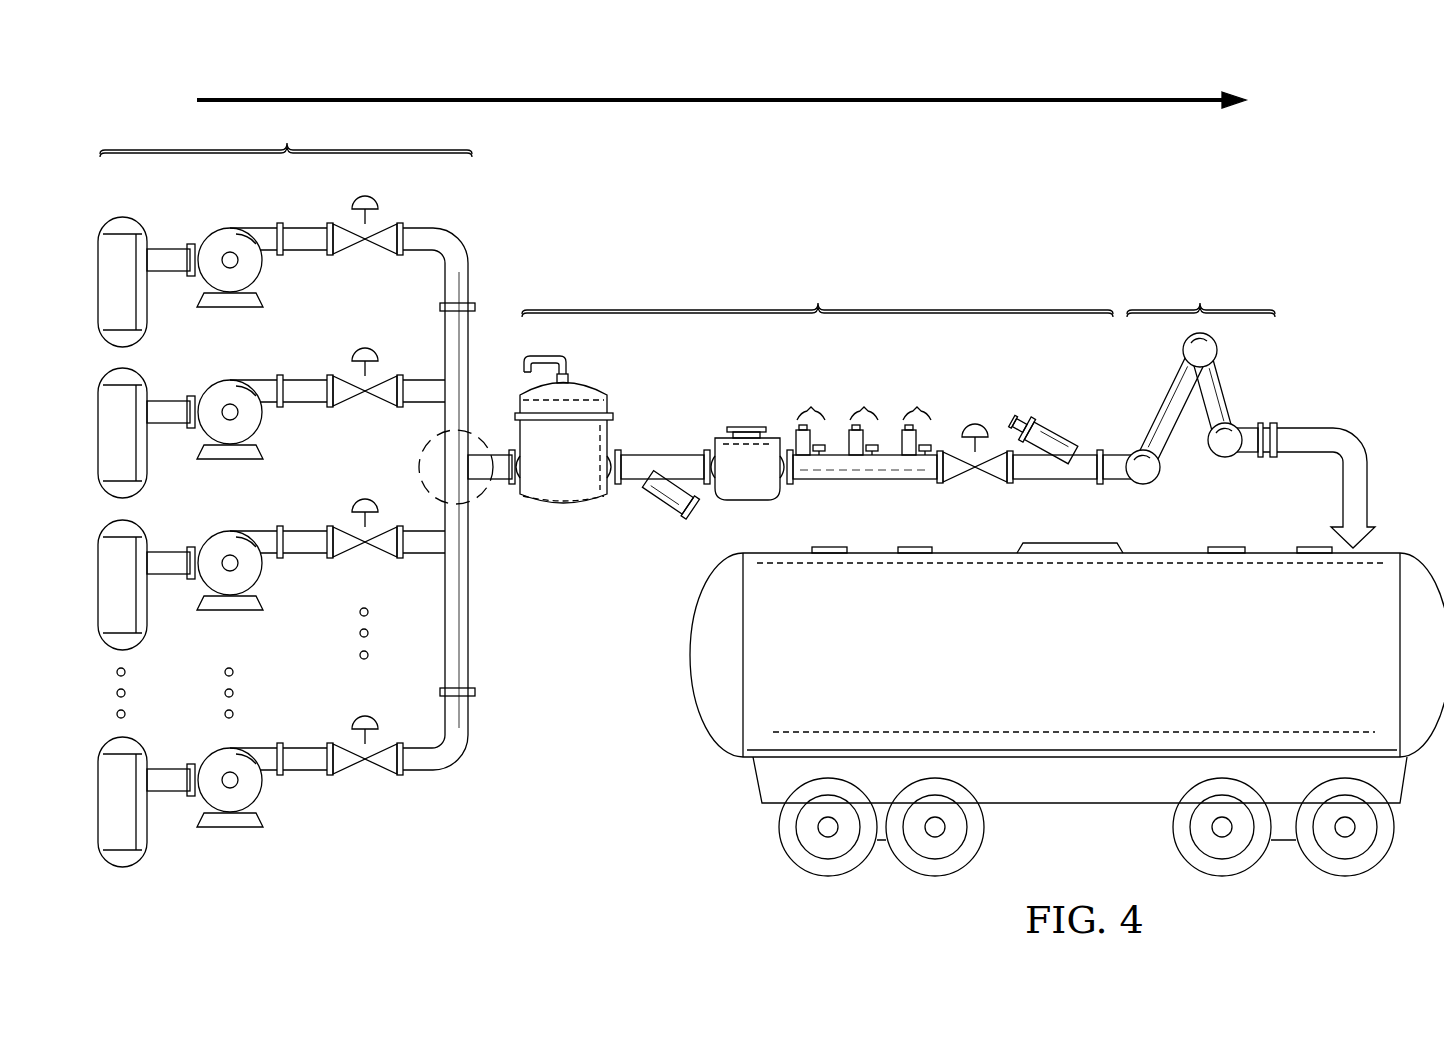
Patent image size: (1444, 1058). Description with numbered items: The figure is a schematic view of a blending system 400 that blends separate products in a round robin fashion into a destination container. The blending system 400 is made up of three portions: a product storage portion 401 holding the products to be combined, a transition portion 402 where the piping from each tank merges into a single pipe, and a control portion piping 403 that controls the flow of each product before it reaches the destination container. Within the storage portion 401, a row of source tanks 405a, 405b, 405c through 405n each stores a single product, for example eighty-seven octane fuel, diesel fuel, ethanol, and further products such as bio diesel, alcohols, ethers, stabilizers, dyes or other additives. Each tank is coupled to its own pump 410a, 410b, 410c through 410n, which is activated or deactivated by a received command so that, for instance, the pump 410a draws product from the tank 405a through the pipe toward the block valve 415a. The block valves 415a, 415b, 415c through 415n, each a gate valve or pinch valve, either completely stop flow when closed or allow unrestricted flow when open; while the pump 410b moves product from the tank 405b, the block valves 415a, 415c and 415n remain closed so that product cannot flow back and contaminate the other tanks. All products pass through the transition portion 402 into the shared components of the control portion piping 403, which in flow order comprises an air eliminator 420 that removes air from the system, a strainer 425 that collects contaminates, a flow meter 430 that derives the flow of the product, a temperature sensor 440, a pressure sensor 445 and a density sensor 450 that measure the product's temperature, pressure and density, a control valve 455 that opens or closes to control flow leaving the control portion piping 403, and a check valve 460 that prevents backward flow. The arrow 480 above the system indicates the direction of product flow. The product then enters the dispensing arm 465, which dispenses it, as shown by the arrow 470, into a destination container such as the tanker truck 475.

The blending system 400 is at (1370, 107).
The product storage portion 401 is at (286, 137).
The transition portion 402 is at (428, 462).
The control portion piping 403 is at (817, 295).
The tank 405a is at (115, 217).
The tank 405b is at (145, 465).
The tank 405c is at (145, 617).
The tank 405n is at (118, 867).
The pump 410a is at (228, 228).
The pump 410b is at (262, 410).
The pump 410c is at (262, 561).
The pump 410n is at (226, 827).
The block valve 415a is at (340, 228).
The block valve 415b is at (340, 380).
The block valve 415c is at (340, 531).
The block valve 415n is at (355, 770).
The air eliminator 420 is at (582, 383).
The strainer 425 is at (650, 497).
The flow meter 430 is at (747, 427).
The temperature sensor 440 is at (808, 417).
The pressure sensor 445 is at (862, 417).
The density sensor 450 is at (916, 417).
The control valve 455 is at (990, 452).
The check valve 460 is at (1063, 440).
The dispensing arm 465 is at (1201, 378).
The arrow 470 is at (1305, 428).
The tanker truck 475 is at (1093, 666).
The arrow 480 is at (720, 97).